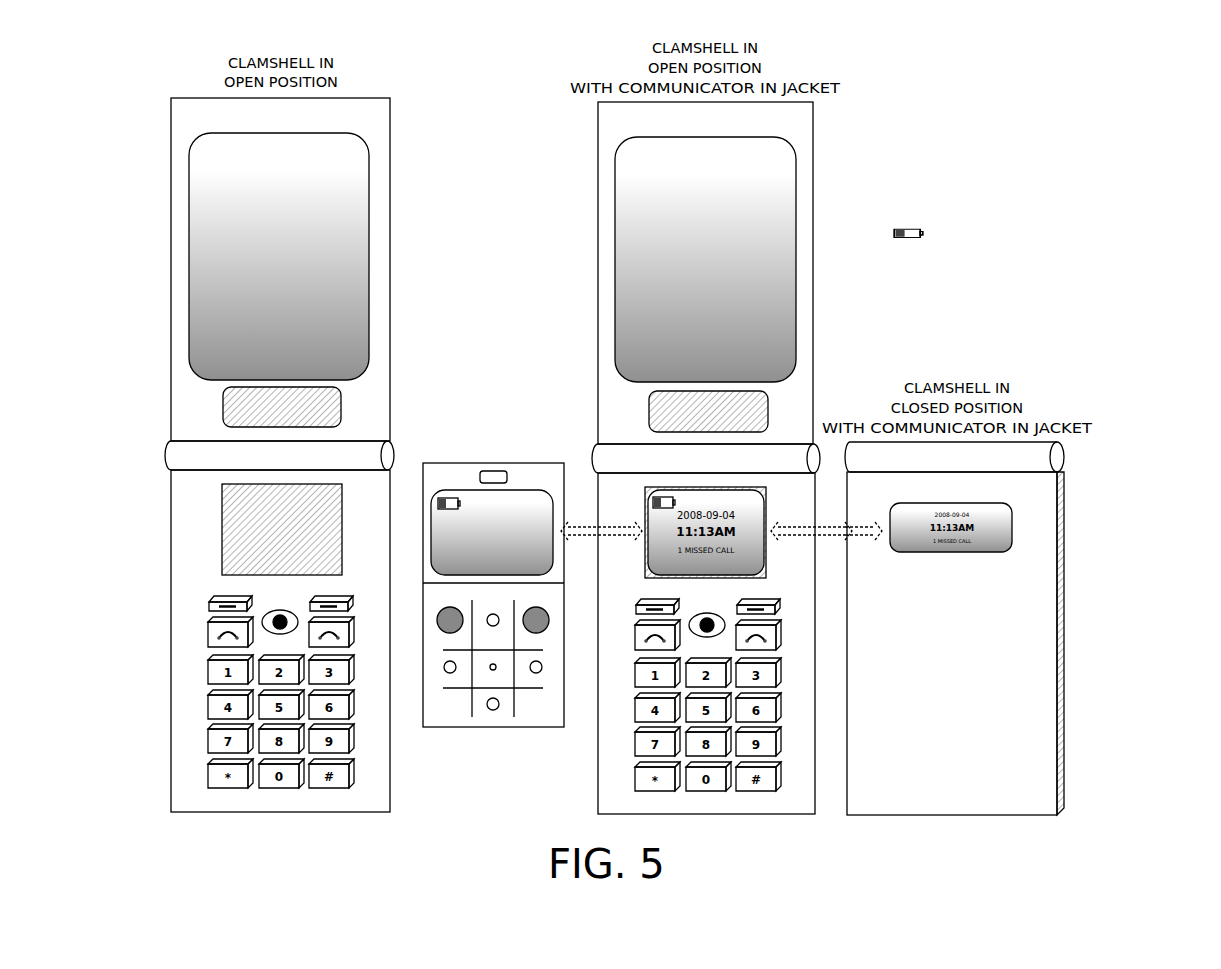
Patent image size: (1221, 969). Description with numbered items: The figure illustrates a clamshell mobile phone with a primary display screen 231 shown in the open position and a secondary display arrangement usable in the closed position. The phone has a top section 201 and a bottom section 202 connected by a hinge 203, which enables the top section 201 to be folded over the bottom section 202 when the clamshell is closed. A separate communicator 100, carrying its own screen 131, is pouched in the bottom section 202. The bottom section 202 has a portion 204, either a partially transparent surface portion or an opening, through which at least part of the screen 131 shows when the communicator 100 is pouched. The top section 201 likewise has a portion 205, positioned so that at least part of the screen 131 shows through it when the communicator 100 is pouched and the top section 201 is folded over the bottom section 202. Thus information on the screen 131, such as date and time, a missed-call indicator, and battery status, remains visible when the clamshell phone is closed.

The communicator 100 is at (527, 470).
The screen 131 is at (470, 500).
The top section 201 is at (192, 117).
The bottom section 202 is at (192, 584).
The hinge 203 is at (192, 456).
The portion 204 is at (235, 527).
The portion 205 is at (233, 410).
The primary display screen 231 is at (347, 175).